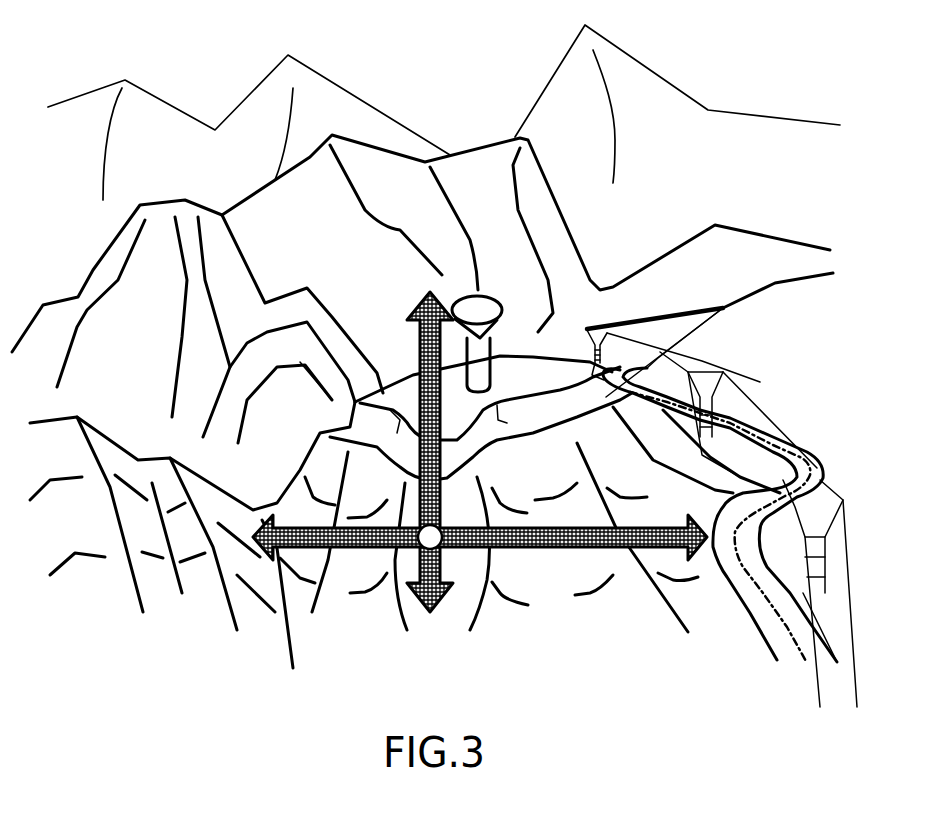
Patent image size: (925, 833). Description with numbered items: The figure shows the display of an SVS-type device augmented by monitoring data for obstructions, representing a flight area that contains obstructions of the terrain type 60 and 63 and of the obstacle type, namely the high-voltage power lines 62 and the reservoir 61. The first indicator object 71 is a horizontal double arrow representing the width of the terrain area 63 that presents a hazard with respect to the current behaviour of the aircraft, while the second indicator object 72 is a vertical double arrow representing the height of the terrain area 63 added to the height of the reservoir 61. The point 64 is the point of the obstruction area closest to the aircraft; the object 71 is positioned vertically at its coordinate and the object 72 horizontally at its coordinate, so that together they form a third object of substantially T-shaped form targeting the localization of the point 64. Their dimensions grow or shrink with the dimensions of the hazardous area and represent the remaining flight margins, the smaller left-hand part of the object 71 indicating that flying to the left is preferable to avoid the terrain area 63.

The terrain type obstruction 60 is at (595, 201).
The reservoir 61 is at (489, 296).
The high-voltage power lines 62 is at (722, 490).
The terrain area 63 is at (466, 418).
The point of the obstruction area closest to the aircraft 64 is at (430, 543).
The first indicator object 71 is at (480, 561).
The second indicator object 72 is at (423, 385).